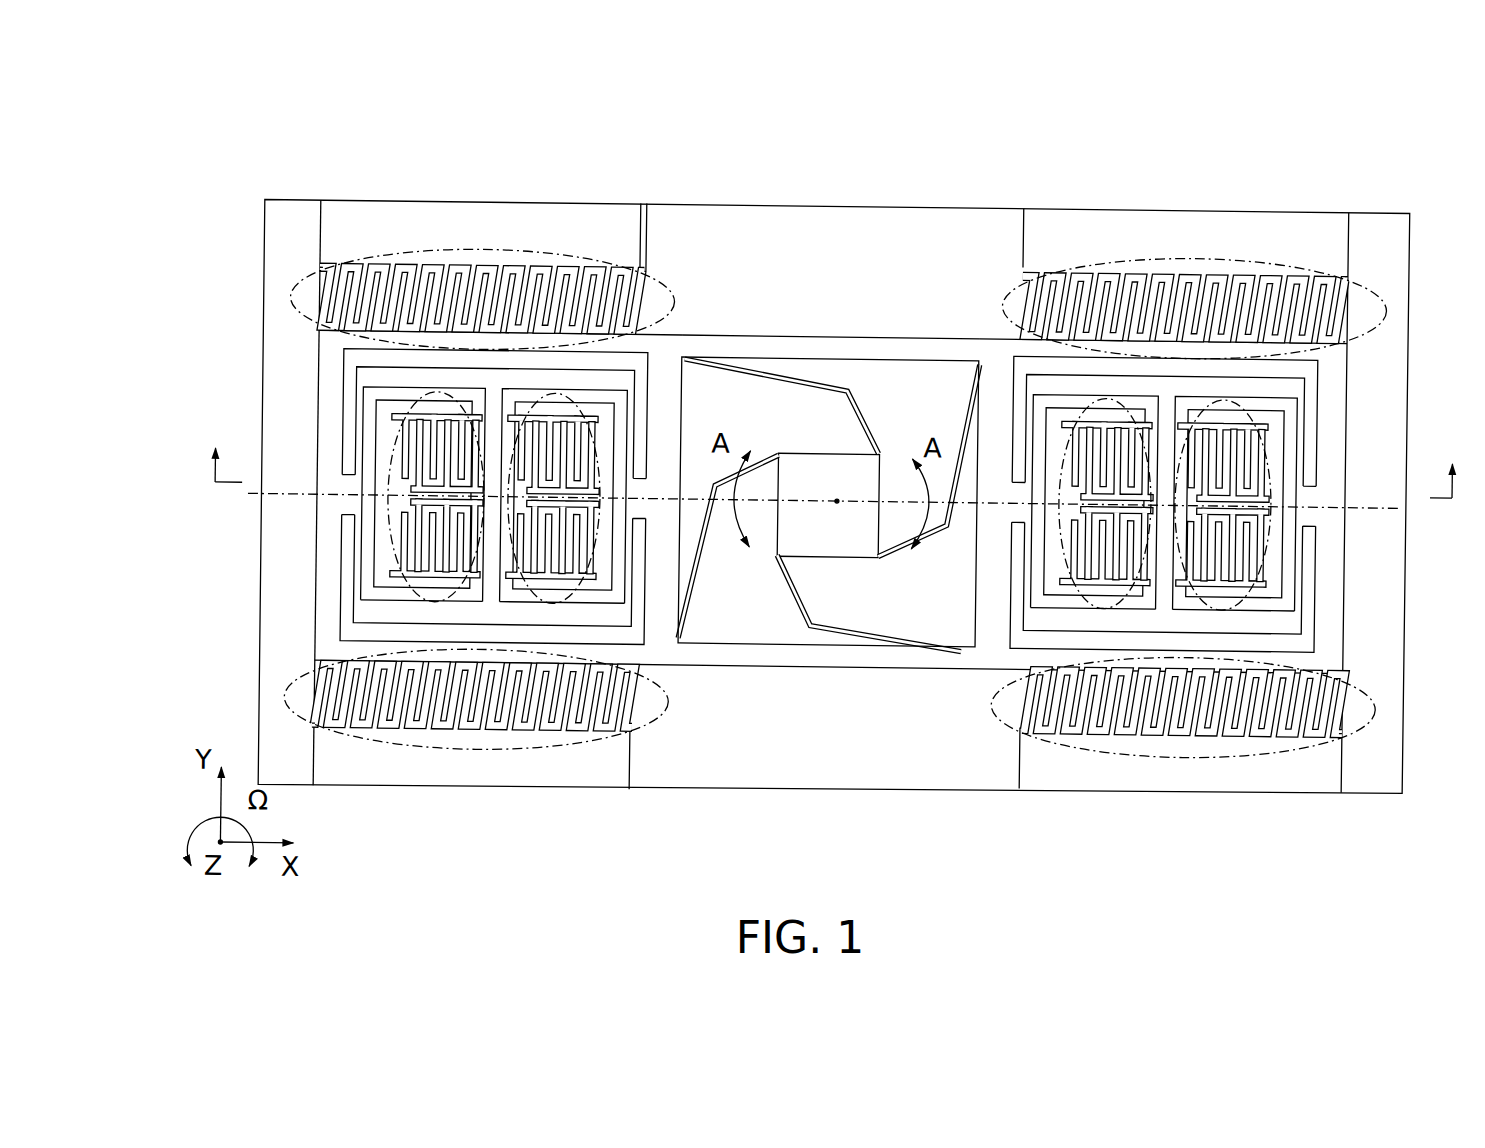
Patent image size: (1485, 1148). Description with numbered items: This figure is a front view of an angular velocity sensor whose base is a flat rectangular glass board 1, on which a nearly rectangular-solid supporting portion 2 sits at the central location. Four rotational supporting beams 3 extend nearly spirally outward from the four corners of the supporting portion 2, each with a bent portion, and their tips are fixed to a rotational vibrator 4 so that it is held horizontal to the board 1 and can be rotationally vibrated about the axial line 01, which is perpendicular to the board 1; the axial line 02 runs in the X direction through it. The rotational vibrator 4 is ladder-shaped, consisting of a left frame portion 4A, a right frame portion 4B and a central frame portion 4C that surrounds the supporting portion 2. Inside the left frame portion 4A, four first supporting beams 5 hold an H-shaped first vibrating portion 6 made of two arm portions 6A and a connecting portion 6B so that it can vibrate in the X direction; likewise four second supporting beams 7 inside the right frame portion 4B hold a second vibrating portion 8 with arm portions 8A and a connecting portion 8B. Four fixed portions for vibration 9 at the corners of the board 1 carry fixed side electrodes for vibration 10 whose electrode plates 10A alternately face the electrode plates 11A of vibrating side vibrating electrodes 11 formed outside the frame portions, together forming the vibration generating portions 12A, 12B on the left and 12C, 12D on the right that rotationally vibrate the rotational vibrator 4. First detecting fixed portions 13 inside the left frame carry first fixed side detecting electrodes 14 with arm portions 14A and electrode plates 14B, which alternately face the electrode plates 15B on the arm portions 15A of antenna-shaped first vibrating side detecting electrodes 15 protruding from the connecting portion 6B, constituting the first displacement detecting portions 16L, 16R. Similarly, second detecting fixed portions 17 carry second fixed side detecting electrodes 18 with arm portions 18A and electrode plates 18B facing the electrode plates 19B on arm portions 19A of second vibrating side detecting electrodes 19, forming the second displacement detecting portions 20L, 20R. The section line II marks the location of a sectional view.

The board 1 is at (880, 787).
The supporting portion 2 is at (846, 470).
The rotational supporting beam 3 is at (764, 386).
The rotational vibrator 4 is at (1346, 598).
The left frame portion 4A is at (611, 353).
The right frame portion 4B is at (1183, 345).
The central frame portion 4C is at (820, 337).
The first supporting beam 5 is at (351, 541).
The first vibrating portion 6 is at (395, 380).
The arm portion 6A is at (425, 627).
The connecting portion 6B is at (494, 409).
The second supporting beam 7 is at (1014, 423).
The second vibrating portion 8 is at (1242, 617).
The arm portion 8A is at (1221, 380).
The connecting portion 8B is at (1143, 574).
The fixed portion for vibration 9 is at (537, 231).
The fixed side electrode for vibration 10 is at (339, 272).
The electrode plate 10A is at (593, 716).
The vibrating side vibrating electrode 11 is at (1332, 283).
The electrode plate 11A is at (356, 296).
The first vibration generating portion 12A is at (365, 746).
The second vibration generating portion 12B is at (300, 287).
The third vibration generating portion 12C is at (1341, 728).
The fourth vibration generating portion 12D is at (1297, 264).
The first detecting fixed portion 13 is at (363, 568).
The first fixed side detecting electrode 14 is at (531, 589).
The arm portion 14A is at (427, 405).
The electrode plate 14B is at (463, 590).
The first vibrating side detecting electrode 15 is at (559, 434).
The arm portion 15A is at (453, 425).
The electrode plate 15B is at (559, 589).
The first displacement detecting portion 16L is at (399, 434).
The first displacement detecting portion 16R is at (591, 451).
The second detecting fixed portion 17 is at (1270, 464).
The second fixed side detecting electrode 18 is at (1084, 417).
The arm portion 18A is at (1226, 543).
The electrode plate 18B is at (1194, 425).
The second vibrating side detecting electrode 19 is at (1092, 609).
The arm portion 19A is at (1176, 554).
The electrode plate 19B is at (1094, 427).
The second displacement detecting portion 20L is at (1053, 545).
The second displacement detecting portion 20R is at (1269, 544).
The axial line O1—O1 01 is at (831, 522).
The axial line O2—O2 02 is at (825, 498).
The section line II is at (834, 496).